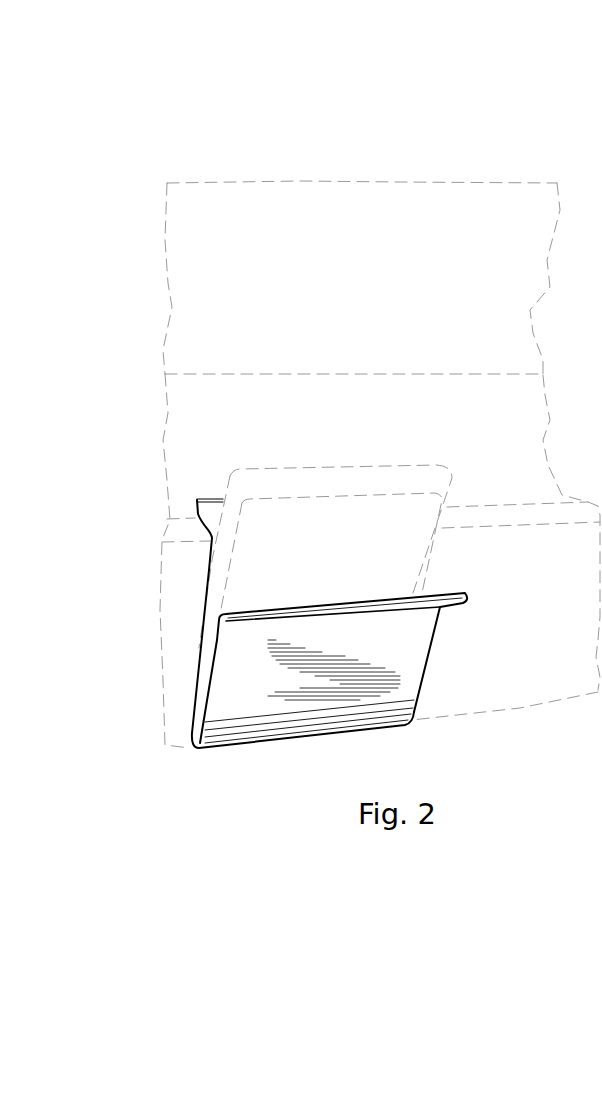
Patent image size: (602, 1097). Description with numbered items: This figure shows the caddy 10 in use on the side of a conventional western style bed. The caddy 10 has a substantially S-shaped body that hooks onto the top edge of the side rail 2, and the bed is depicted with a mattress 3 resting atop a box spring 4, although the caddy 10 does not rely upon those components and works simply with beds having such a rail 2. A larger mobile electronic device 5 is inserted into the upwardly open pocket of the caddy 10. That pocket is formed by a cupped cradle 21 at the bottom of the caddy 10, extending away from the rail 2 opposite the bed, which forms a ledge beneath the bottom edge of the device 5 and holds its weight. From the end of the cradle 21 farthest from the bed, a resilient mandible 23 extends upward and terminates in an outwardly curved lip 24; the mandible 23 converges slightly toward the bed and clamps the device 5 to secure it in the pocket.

The caddy 10 is at (168, 160).
The mattress 3 is at (185, 272).
The box spring 4 is at (168, 413).
The mobile electronic device 5 is at (340, 454).
The side rail 2 is at (167, 530).
The cupped cradle 21 is at (240, 742).
The resilient mandible 23 is at (232, 690).
The outwardly curved lip 24 is at (287, 620).